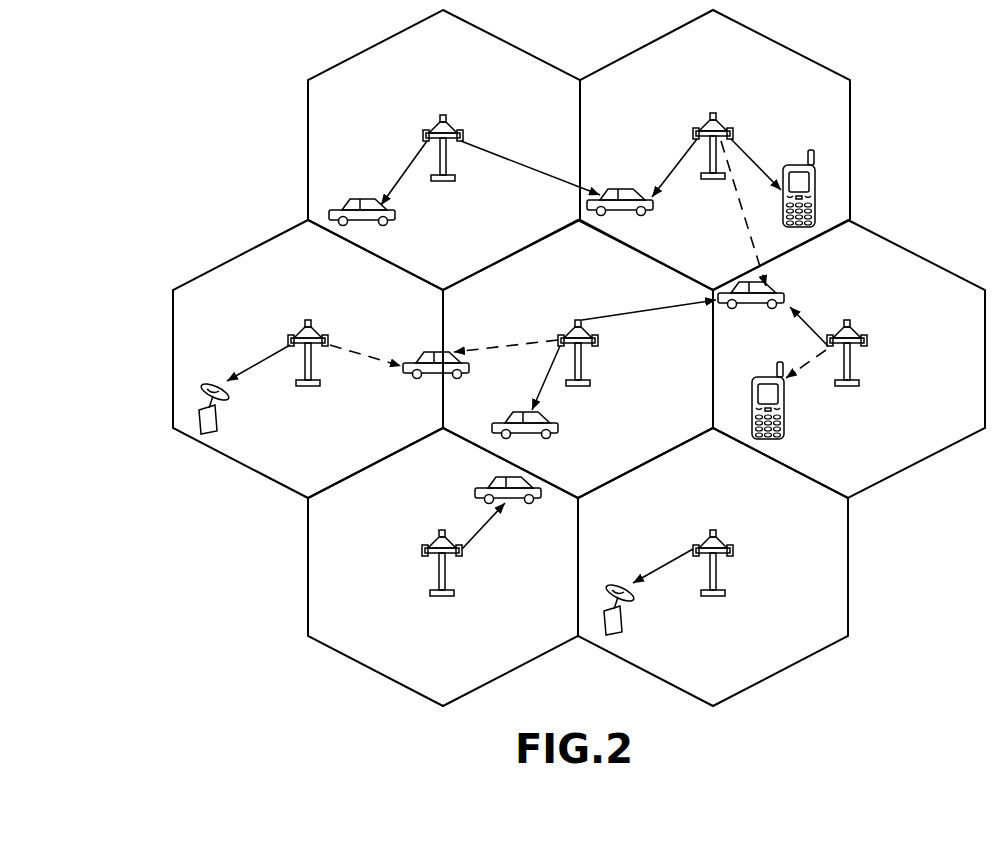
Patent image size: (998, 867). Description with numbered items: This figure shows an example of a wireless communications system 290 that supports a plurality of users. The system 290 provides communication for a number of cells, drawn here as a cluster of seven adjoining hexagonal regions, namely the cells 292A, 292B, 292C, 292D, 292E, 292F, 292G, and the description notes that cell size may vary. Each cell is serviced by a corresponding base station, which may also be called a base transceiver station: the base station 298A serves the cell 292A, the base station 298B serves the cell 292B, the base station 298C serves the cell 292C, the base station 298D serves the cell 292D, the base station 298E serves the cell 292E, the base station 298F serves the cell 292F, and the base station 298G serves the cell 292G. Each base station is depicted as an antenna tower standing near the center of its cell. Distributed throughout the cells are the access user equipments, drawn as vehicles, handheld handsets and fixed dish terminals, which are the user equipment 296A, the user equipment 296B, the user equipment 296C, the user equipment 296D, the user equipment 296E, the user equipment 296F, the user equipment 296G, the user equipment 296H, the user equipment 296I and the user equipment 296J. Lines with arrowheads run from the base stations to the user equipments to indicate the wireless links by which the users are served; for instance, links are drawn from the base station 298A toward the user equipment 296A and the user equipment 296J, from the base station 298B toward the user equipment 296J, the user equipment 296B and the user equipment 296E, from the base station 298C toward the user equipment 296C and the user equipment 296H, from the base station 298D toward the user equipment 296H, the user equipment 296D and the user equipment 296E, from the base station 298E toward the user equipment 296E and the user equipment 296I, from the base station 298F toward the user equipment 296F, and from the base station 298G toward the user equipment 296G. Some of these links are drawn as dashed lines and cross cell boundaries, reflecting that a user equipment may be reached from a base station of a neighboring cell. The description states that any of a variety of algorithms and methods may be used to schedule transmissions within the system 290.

The wireless communications system 290 is at (112, 85).
The cell 292A is at (463, 50).
The cell 292B is at (733, 50).
The cell 292C is at (330, 265).
The cell 292D is at (595, 265).
The cell 292E is at (868, 265).
The cell 292F is at (463, 470).
The cell 292G is at (733, 470).
The base station 298A is at (444, 114).
The base station 298B is at (713, 112).
The base station 298C is at (309, 320).
The base station 298D is at (578, 320).
The base station 298E is at (847, 320).
The base station 298F is at (442, 530).
The base station 298G is at (713, 530).
The access user equipment 296A is at (396, 217).
The access user equipment 296B is at (796, 165).
The access user equipment 296C is at (218, 421).
The access user equipment 296D is at (560, 433).
The access user equipment 296E is at (750, 308).
The access user equipment 296F is at (540, 502).
The access user equipment 296G is at (624, 624).
The access user equipment 296H is at (410, 377).
The access user equipment 296I is at (785, 431).
The access user equipment 296J is at (621, 189).